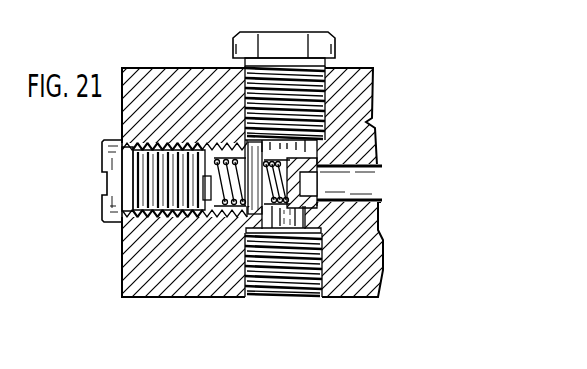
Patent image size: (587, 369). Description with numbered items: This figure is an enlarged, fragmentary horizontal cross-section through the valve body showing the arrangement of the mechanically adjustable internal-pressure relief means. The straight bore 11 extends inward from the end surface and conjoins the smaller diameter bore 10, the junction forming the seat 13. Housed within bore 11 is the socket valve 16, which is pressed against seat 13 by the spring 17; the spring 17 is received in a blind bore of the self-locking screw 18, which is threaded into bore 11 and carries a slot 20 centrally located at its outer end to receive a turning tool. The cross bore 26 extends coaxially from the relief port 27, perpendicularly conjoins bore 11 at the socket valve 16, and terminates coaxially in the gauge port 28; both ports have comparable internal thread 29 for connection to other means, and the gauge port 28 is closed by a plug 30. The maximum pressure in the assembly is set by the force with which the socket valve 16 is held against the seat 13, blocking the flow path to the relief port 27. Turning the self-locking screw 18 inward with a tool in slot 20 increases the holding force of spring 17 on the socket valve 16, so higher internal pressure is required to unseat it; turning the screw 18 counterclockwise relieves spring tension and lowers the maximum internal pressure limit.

The smaller diameter bore 10 is at (348, 186).
The straight bore 11 is at (245, 130).
The seat 13 is at (298, 168).
The socket valve 16 is at (312, 198).
The spring 17 is at (237, 214).
The self-locking screw 18 is at (203, 214).
The slot 20 is at (210, 143).
The cross bore 26 is at (312, 152).
The relief port 27 is at (287, 285).
The gauge port 28 is at (337, 130).
The internal thread 29 is at (327, 112).
The plug 30 is at (283, 44).